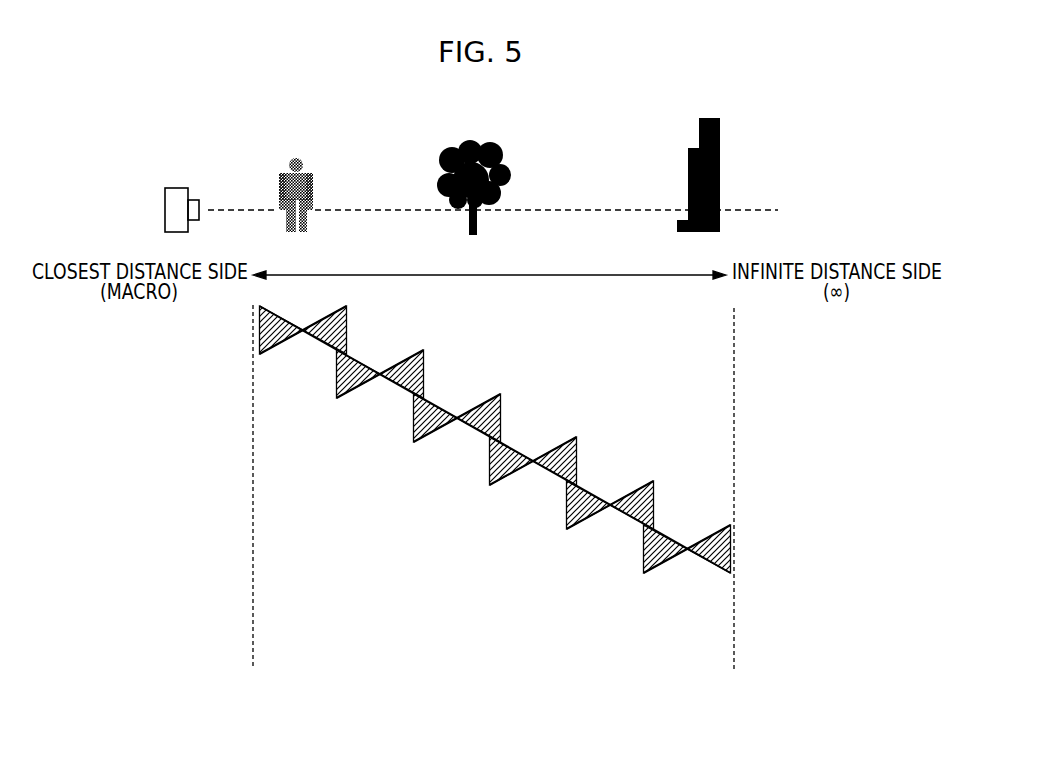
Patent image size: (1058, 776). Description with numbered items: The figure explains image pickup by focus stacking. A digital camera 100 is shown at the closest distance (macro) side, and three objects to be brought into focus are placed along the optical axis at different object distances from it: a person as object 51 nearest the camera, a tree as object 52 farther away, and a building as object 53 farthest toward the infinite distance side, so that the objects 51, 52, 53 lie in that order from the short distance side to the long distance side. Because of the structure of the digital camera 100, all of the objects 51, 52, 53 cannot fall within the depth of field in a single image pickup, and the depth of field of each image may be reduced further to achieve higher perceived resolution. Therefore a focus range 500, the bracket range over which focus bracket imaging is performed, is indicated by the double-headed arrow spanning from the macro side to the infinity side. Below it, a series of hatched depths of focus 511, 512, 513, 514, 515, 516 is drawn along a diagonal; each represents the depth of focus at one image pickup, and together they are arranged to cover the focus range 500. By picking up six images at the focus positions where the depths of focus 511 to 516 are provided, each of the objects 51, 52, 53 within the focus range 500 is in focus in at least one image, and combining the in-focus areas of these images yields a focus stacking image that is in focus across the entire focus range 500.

The digital camera 100 is at (180, 187).
The object 51 is at (300, 157).
The object 52 is at (498, 150).
The object 53 is at (722, 133).
The focus range 500 is at (588, 277).
The depth of focus 511 is at (282, 343).
The depth of focus 512 is at (359, 387).
The depth of focus 513 is at (436, 431).
The depth of focus 514 is at (512, 474).
The depth of focus 515 is at (589, 518).
The depth of focus 516 is at (666, 562).